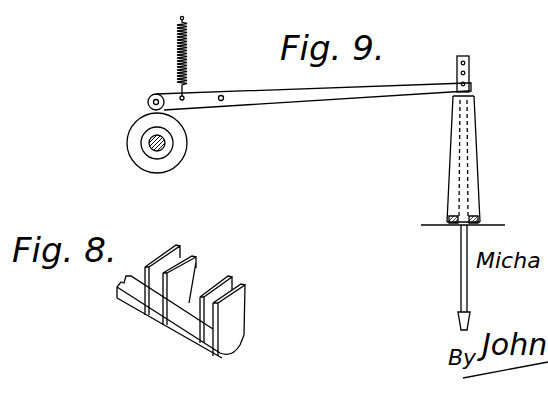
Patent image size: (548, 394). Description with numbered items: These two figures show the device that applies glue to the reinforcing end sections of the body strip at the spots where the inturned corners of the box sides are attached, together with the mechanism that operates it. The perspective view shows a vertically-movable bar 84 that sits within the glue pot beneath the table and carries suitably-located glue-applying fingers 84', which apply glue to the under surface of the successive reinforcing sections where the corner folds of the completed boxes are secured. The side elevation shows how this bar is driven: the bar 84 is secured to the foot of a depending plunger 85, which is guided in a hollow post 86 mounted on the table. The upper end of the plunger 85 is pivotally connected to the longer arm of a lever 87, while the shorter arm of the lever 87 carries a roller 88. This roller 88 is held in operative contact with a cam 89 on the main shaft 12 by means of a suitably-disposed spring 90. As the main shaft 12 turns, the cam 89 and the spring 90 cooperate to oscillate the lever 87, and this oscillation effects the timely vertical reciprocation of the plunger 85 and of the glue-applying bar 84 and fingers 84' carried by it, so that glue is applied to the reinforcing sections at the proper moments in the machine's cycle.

In FIG. 9, the main shaft 12 is at (170, 147).
In FIG. 9, the vertically-movable bar 84 is at (439, 320).
In FIG. 8, the vertically-movable bar 84 is at (180, 320).
In FIG. 8, the glue-applying fingers 84' is at (225, 291).
In FIG. 9, the depending plunger 85 is at (460, 255).
In FIG. 9, the hollow post 86 is at (472, 145).
In FIG. 9, the lever 87 is at (337, 95).
In FIG. 9, the roller 88 is at (150, 97).
In FIG. 9, the cam 89 is at (127, 137).
In FIG. 9, the spring 90 is at (188, 50).